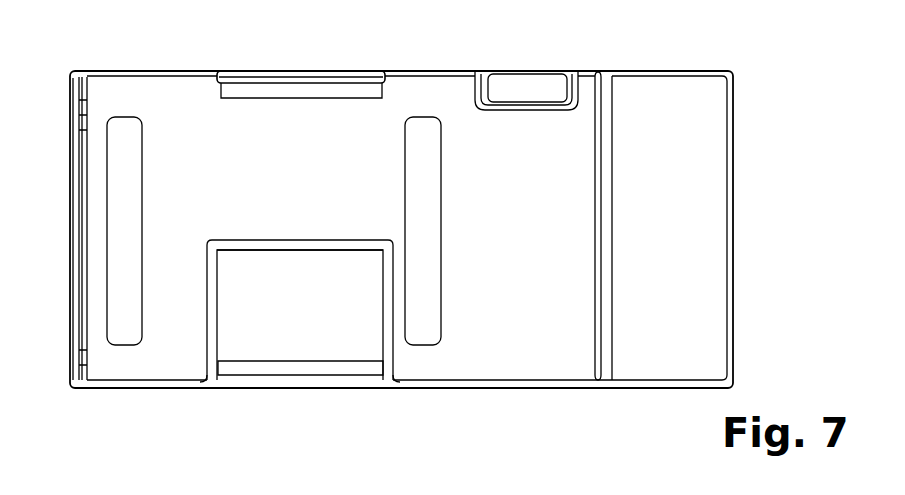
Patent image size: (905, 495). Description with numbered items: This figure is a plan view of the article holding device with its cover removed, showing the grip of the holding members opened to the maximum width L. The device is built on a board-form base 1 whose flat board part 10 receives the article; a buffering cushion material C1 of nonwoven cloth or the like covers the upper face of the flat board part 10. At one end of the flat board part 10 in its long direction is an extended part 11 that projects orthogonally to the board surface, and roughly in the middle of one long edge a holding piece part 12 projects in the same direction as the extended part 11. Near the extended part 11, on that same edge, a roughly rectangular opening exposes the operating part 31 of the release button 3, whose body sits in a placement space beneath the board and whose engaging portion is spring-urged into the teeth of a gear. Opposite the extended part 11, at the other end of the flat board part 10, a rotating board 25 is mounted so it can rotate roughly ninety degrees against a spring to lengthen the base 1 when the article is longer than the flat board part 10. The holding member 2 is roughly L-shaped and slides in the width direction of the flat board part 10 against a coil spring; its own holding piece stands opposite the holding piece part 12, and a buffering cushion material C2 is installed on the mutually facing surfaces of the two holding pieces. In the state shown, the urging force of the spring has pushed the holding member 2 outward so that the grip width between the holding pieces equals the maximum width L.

The base 1 is at (650, 70).
The flat board part 10 is at (198, 125).
The extended part 11 is at (703, 100).
The holding piece part 12 is at (287, 70).
The holding member 2 is at (300, 340).
The release button 3 is at (526, 69).
The operating part 31 is at (527, 90).
The rotating board 25 is at (72, 220).
The buffering cushion material C1 is at (122, 120).
The buffering cushion material C2 is at (302, 95).
The maximum width L is at (342, 361).